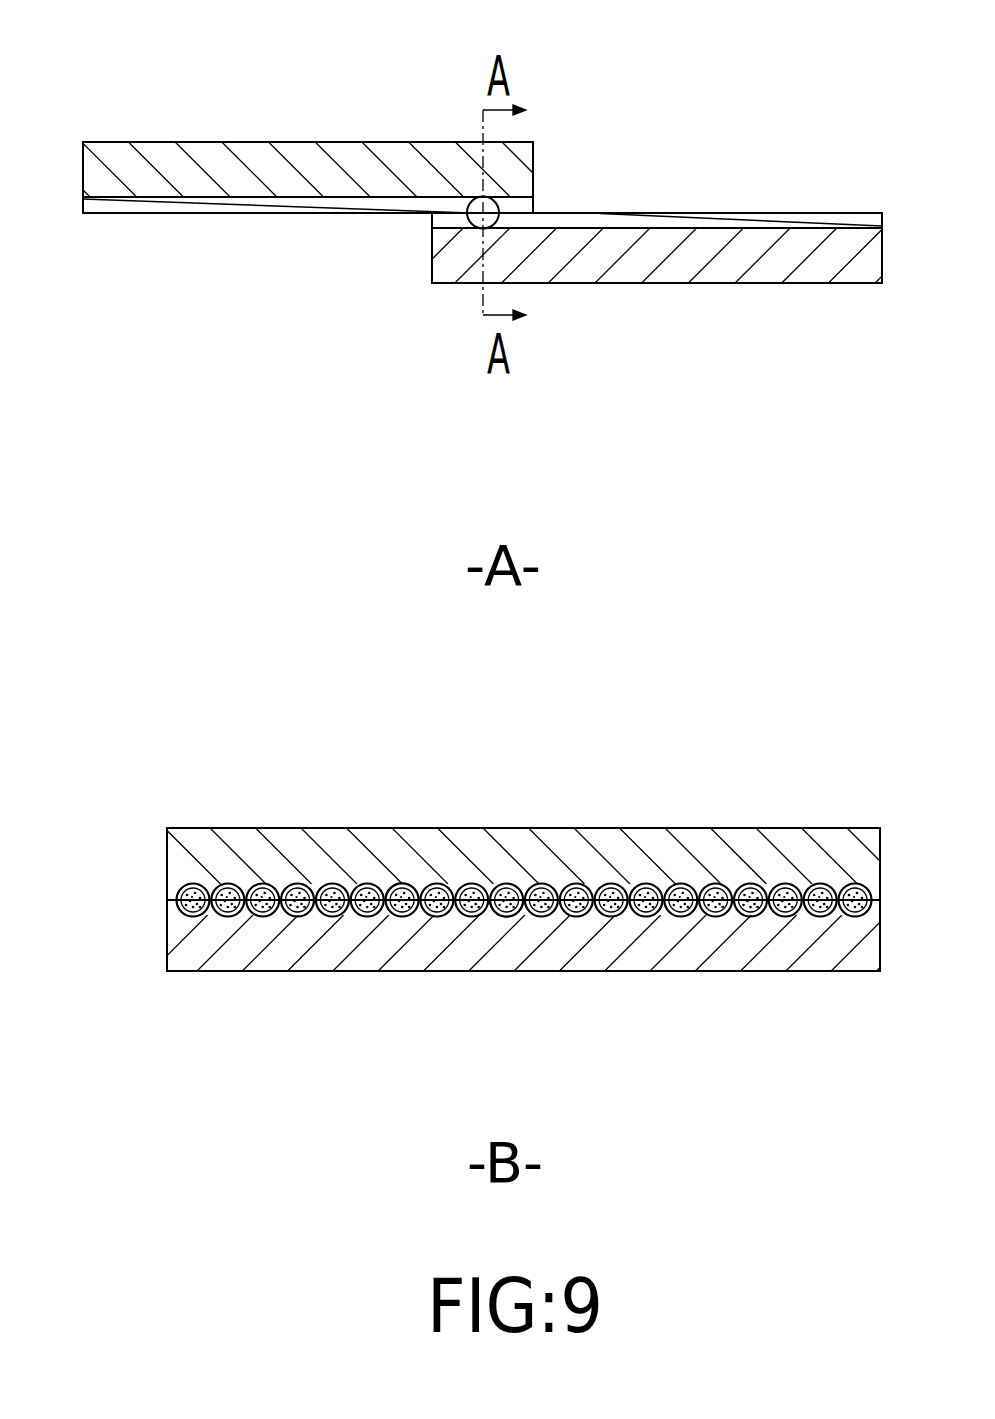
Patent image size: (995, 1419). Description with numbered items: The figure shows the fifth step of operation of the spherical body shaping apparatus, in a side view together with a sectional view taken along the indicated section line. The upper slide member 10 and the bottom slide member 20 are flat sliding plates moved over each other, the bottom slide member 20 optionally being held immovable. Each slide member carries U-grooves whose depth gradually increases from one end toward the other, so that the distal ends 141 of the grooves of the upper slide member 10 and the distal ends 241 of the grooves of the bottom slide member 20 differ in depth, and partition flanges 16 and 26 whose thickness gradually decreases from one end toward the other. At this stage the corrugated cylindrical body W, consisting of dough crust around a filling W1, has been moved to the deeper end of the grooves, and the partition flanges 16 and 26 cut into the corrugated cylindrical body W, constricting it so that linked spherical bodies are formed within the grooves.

In FIG. 9A, the upper slide member 10 is at (262, 142).
In FIG. 9B, the upper slide member 10 is at (800, 828).
In FIG. 9A, the bottom slide member 20 is at (675, 283).
In FIG. 9B, the bottom slide member 20 is at (282, 972).
In FIG. 9A, the partition flange 16 is at (213, 206).
In FIG. 9A, the partition flange 26 is at (773, 220).
In FIG. 9A, the distal end of U-groove 141 is at (128, 197).
In FIG. 9B, the distal end of U-groove 141 is at (403, 892).
In FIG. 9A, the distal end of U-groove 241 is at (432, 283).
In FIG. 9B, the distal end of U-groove 241 is at (504, 905).
In FIG. 9A, the cylindrical body W is at (476, 203).
In FIG. 9B, the cylindrical body W is at (573, 893).
In FIG. 9B, the filling W1 is at (681, 897).